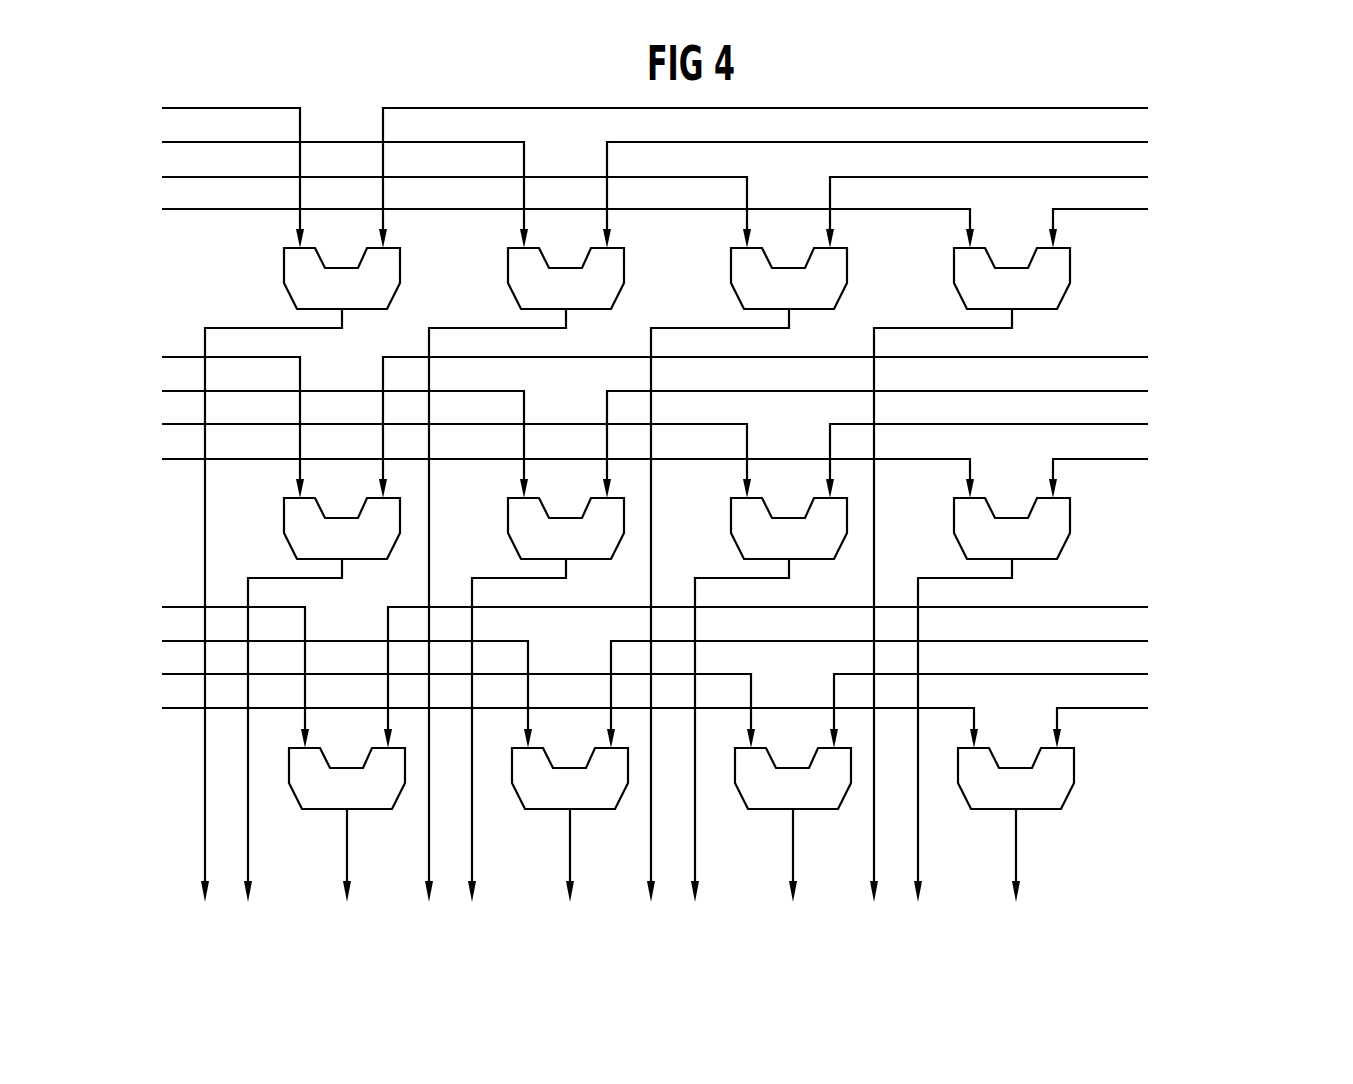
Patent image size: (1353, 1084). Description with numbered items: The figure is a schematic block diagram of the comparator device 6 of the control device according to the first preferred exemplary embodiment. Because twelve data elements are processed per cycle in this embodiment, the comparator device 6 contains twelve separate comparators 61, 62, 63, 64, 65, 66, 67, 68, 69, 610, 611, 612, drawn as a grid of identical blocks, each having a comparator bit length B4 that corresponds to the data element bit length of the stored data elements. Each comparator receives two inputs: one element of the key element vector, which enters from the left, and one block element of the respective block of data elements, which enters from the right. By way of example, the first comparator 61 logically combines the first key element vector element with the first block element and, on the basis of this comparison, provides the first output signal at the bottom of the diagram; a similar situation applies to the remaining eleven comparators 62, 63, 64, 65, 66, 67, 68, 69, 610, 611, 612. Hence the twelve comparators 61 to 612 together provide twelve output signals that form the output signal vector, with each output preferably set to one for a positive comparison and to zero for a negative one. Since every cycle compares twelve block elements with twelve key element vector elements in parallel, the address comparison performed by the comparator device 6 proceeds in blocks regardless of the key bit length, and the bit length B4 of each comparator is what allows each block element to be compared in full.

The comparator device 6 is at (1245, 514).
The first comparator 61 is at (328, 305).
The comparator 62 is at (552, 305).
The comparator 63 is at (775, 305).
The comparator 64 is at (998, 305).
The comparator 65 is at (328, 555).
The comparator 66 is at (552, 555).
The comparator 67 is at (775, 555).
The comparator 68 is at (998, 555).
The comparator 69 is at (333, 805).
The comparator 610 is at (548, 805).
The comparator 611 is at (771, 805).
The twelfth comparator 612 is at (994, 805).
The comparator bit length B4 is at (652, 561).